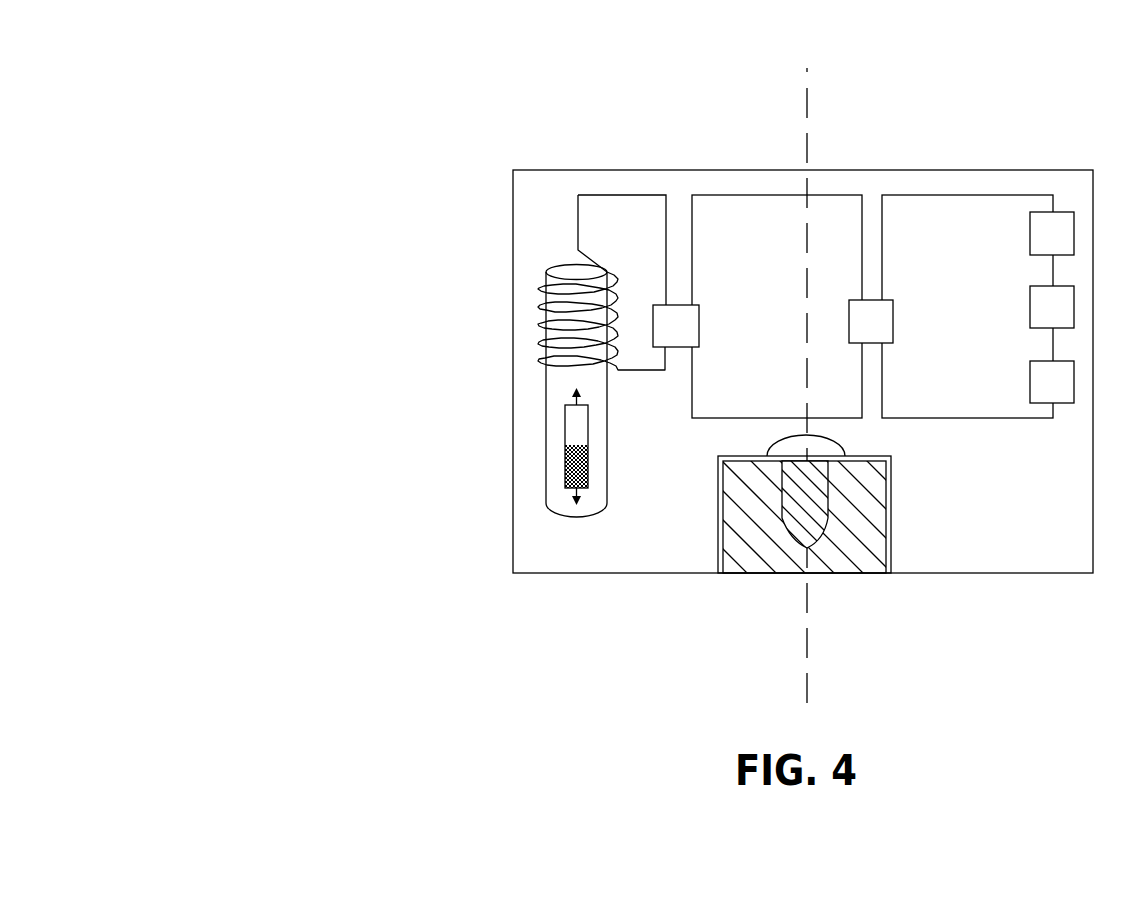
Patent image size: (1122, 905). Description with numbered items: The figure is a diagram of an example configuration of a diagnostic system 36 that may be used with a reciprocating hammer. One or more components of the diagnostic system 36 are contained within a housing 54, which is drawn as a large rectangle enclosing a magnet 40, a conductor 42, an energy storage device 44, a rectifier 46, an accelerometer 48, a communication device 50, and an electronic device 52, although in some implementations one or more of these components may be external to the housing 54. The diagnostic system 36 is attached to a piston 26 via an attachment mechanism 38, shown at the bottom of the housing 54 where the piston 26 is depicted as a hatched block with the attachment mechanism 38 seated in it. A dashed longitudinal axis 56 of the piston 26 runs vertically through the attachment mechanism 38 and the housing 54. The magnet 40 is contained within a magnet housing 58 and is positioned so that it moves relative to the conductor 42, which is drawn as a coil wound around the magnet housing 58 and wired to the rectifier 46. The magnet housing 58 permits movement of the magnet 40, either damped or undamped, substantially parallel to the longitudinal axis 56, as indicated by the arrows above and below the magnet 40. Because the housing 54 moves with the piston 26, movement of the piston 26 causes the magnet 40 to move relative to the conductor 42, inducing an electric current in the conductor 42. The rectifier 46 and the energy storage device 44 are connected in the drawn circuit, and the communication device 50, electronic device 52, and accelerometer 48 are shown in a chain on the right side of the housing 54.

The piston 26 is at (731, 534).
The diagnostic system 36 is at (300, 63).
The attachment mechanism 38 is at (773, 487).
The magnet 40 is at (554, 457).
The conductor 42 is at (529, 324).
The energy storage device 44 is at (860, 332).
The rectifier 46 is at (665, 336).
The accelerometer 48 is at (1041, 392).
The communication device 50 is at (1041, 243).
The electronic device 52 is at (1041, 317).
The housing 54 is at (503, 204).
The longitudinal axis 56 is at (797, 676).
The magnet housing 58 is at (536, 399).